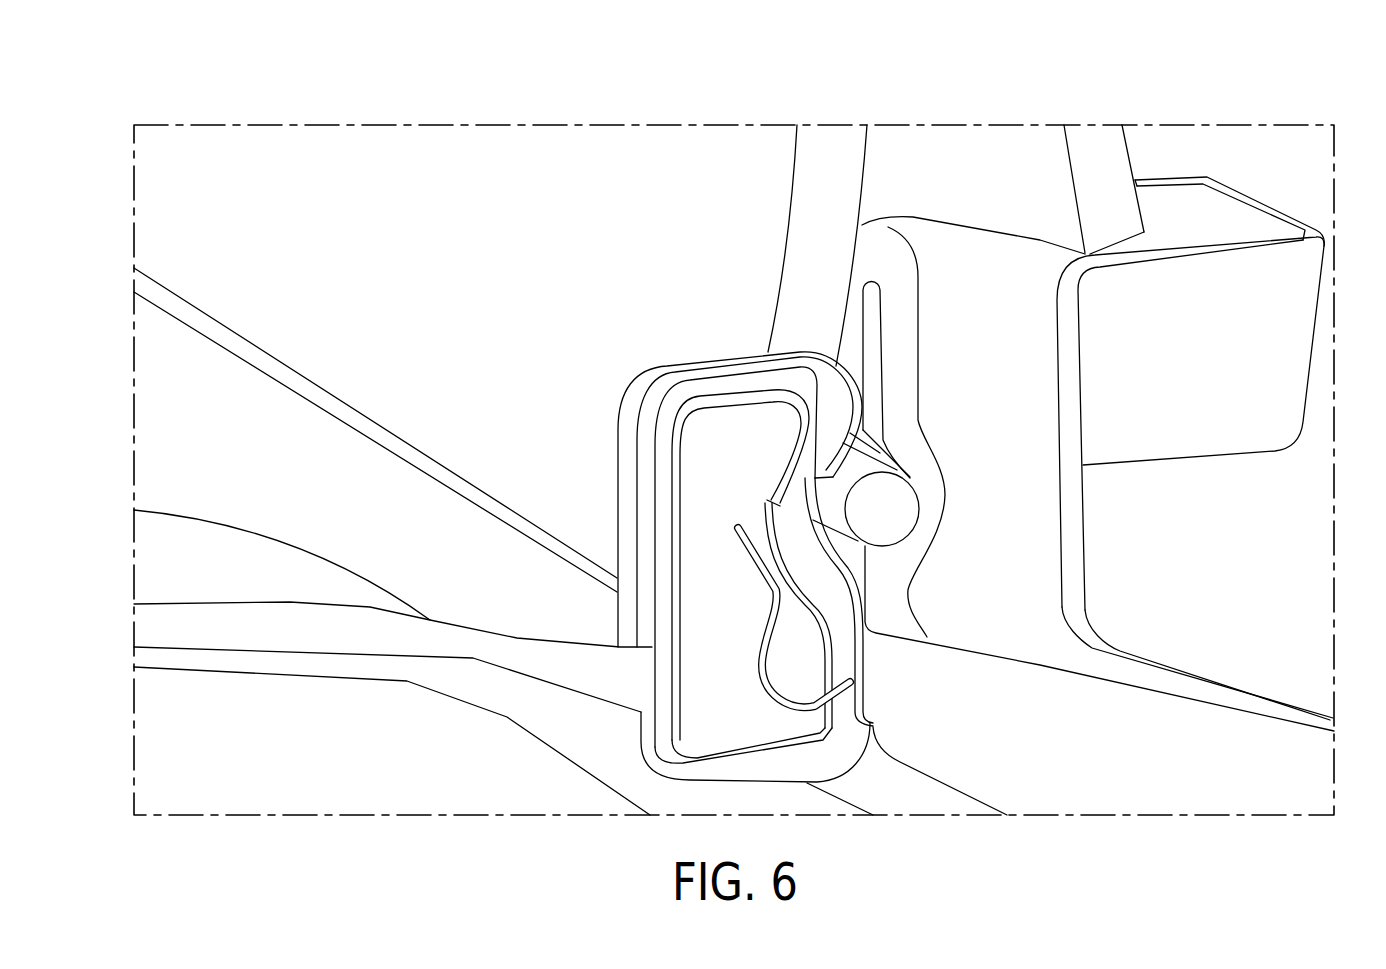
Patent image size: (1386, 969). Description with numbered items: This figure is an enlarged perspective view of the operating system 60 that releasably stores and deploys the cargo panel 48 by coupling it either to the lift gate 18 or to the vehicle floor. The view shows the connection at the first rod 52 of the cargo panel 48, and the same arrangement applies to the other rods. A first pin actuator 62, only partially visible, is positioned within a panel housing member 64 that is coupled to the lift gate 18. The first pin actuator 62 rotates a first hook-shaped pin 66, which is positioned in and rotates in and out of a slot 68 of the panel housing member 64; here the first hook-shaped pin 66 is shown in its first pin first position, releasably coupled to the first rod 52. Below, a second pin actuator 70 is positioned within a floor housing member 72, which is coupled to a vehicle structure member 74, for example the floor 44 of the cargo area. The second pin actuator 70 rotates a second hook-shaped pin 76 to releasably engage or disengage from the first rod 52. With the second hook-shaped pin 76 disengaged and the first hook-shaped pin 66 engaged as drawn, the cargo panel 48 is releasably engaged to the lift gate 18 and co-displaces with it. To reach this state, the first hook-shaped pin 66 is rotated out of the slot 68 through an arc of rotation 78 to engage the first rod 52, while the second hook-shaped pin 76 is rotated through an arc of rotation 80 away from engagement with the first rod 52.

The operating system 60 is at (1014, 88).
The cargo panel 48 is at (830, 155).
The lift gate 18 is at (1097, 143).
The panel housing member 64 is at (1000, 347).
The slot 68 is at (882, 345).
The first hook-shaped pin 66 is at (893, 445).
The first pin actuator 62 is at (912, 476).
The arc of rotation 78 is at (938, 461).
The first rod 52 is at (885, 515).
The floor housing member 72 is at (742, 360).
The second hook-shaped pin 76 is at (800, 717).
The arc of rotation 80 is at (752, 653).
The vehicle structure member 74 is at (597, 672).
The second pin actuator 70 is at (700, 737).
The floor 44 is at (918, 794).